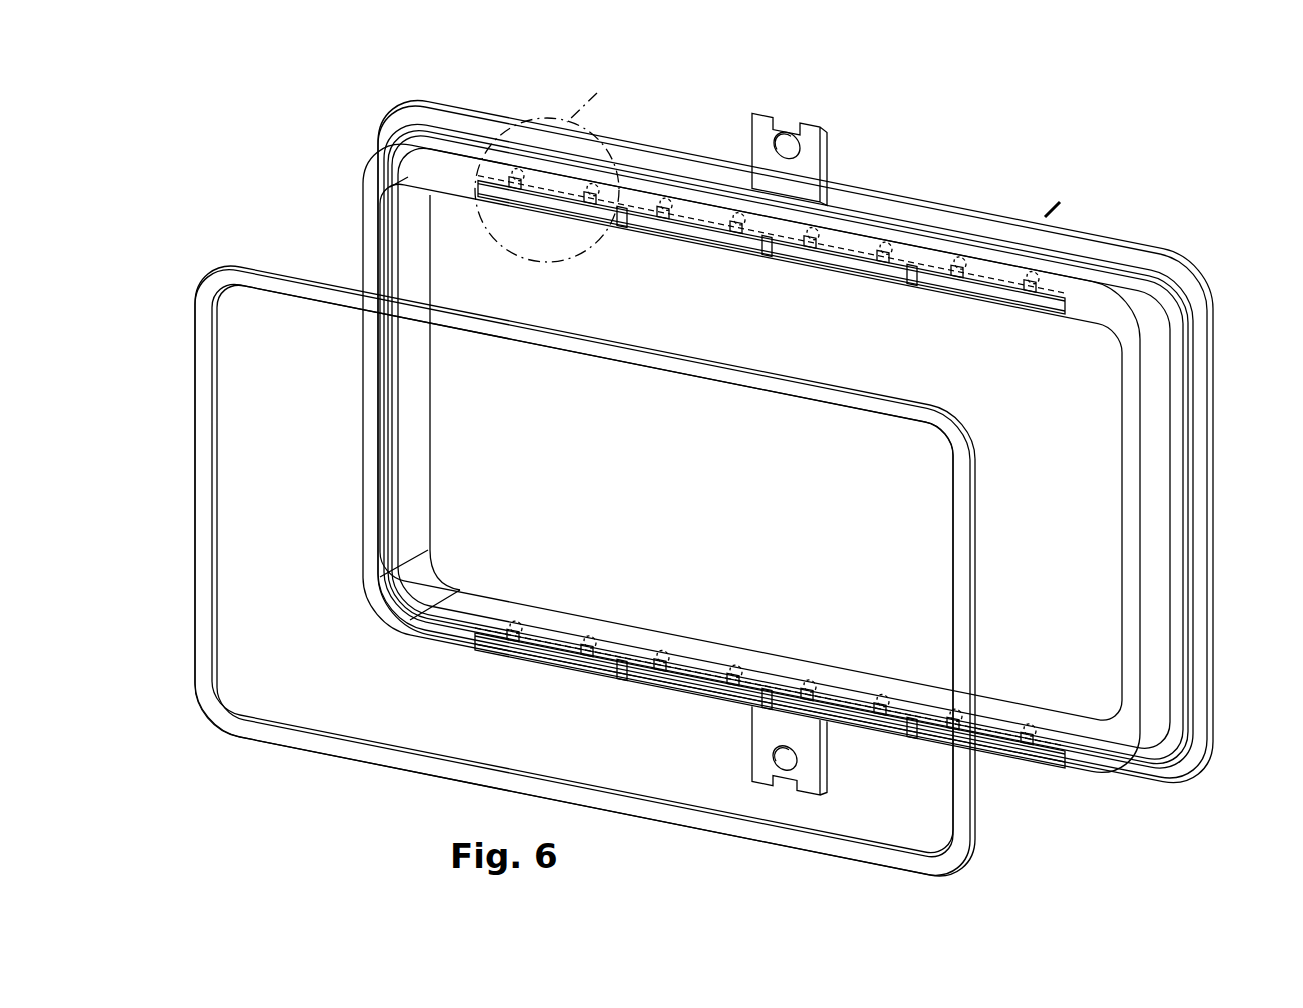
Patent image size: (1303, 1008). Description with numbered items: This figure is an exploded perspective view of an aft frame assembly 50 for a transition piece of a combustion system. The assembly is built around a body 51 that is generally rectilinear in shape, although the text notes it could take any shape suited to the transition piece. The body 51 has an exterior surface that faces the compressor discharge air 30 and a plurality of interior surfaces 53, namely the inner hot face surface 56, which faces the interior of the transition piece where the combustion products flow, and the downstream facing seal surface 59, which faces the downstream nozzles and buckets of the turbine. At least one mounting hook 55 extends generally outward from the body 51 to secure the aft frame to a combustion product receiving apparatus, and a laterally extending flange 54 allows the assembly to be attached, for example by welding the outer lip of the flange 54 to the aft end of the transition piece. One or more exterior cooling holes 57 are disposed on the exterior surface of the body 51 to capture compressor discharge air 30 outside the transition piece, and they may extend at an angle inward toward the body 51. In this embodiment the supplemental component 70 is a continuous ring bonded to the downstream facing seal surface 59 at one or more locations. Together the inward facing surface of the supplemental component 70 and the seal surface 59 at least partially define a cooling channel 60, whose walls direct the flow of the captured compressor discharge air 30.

The compressor discharge air 30 is at (1030, 265).
The aft frame assembly 50 is at (255, 132).
The body 51 is at (350, 128).
The interior surfaces 53 is at (446, 396).
The laterally extending flange 54 is at (1157, 375).
The mounting hook 55 is at (817, 148).
The inner hot face surface 56 is at (414, 444).
The exterior cooling holes 57 is at (648, 195).
The downstream facing seal surface 59 is at (376, 185).
The cooling channel 60 is at (980, 285).
The supplemental component 70 is at (295, 756).